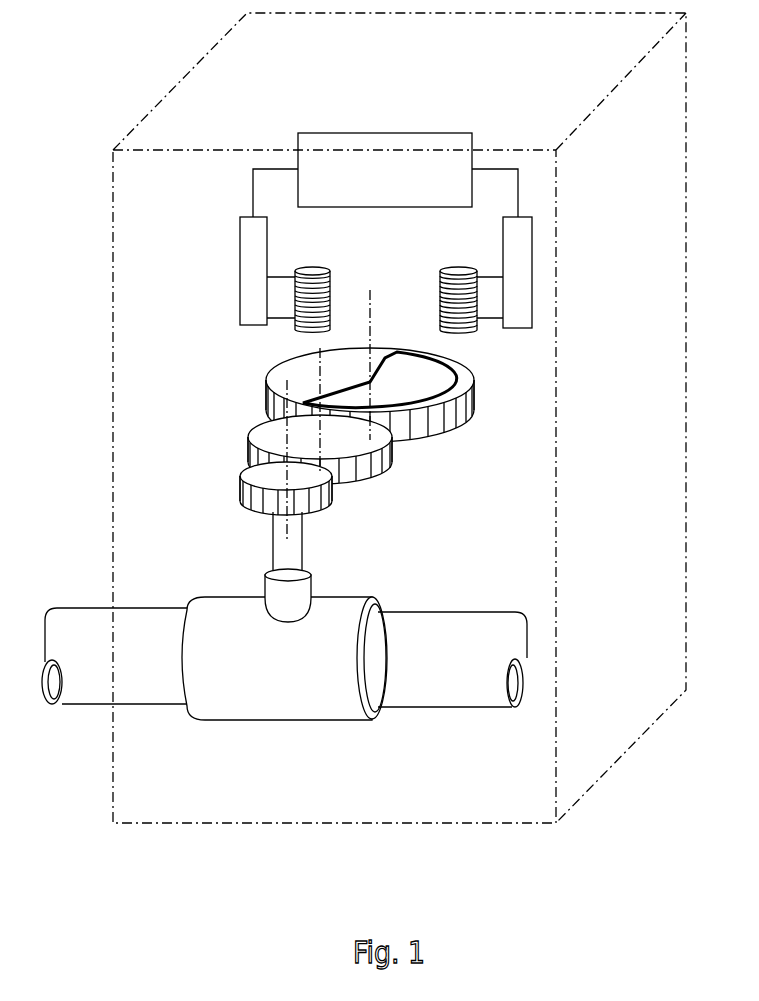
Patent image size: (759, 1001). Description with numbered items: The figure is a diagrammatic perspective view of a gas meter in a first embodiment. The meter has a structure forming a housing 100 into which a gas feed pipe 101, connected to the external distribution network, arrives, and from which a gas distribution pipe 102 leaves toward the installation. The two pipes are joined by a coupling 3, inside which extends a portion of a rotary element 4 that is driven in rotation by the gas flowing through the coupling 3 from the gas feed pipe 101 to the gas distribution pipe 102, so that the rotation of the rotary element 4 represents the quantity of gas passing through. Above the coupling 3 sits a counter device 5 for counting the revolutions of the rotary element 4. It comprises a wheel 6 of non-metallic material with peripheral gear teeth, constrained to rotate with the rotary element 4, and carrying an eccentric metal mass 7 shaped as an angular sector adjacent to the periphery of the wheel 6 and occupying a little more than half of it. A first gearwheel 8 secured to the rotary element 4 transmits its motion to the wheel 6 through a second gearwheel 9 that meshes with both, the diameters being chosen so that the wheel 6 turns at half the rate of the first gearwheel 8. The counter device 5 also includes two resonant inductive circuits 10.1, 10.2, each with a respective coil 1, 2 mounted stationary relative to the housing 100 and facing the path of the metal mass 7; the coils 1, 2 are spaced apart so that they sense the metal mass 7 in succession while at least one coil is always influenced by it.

The housing 100 is at (178, 76).
The counter device 5 is at (490, 138).
The resonant inductive circuit 10.1 is at (524, 284).
The resonant inductive circuit 10.2 is at (246, 292).
The coil 1 is at (444, 268).
The coil 2 is at (318, 268).
The wheel 6 is at (458, 430).
The eccentric metal mass 7 is at (458, 378).
The second gearwheel 9 is at (378, 470).
The first gearwheel 8 is at (322, 505).
The rotary element 4 is at (275, 533).
The coupling 3 is at (298, 713).
The gas feed pipe 101 is at (85, 704).
The gas distribution pipe 102 is at (462, 703).